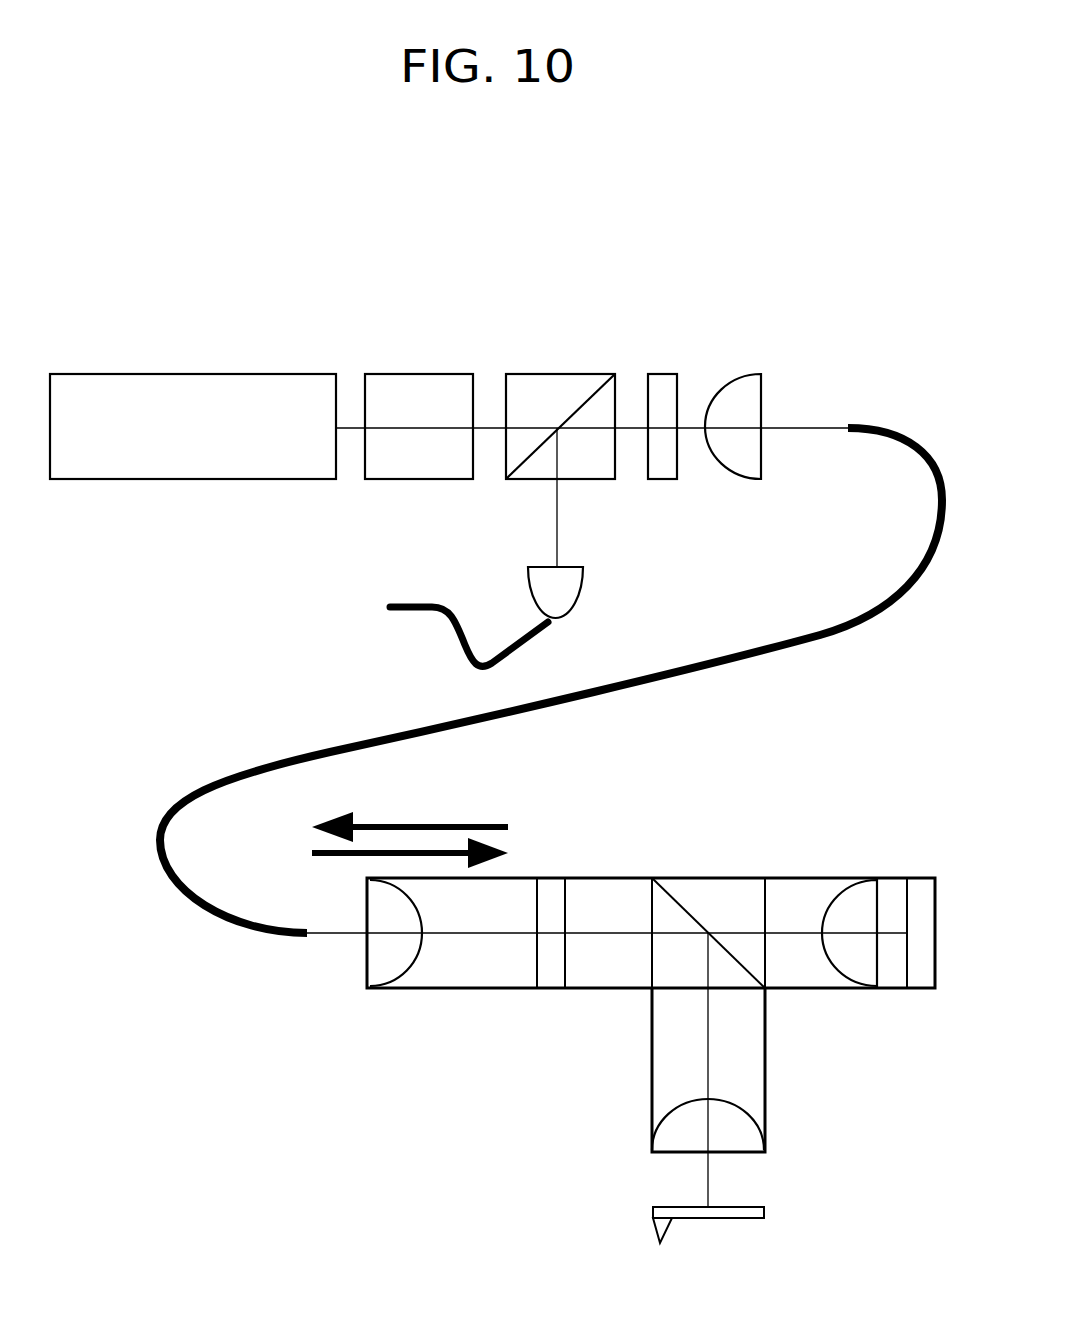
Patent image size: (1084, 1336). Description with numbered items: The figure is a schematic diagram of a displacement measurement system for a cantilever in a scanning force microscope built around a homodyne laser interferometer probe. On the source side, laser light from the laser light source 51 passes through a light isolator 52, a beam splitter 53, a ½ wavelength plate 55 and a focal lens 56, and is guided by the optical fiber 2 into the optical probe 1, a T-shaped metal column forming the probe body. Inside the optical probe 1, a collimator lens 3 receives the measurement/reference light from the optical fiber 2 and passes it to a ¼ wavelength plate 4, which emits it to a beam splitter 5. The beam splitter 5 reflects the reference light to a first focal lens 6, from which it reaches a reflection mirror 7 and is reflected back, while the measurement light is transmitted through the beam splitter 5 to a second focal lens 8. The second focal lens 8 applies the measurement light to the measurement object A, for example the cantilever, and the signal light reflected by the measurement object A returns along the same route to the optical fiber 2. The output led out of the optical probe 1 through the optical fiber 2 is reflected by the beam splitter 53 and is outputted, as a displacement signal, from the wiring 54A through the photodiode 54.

The laser light source 51 is at (293, 372).
The light isolator 52 is at (440, 372).
The beam splitter 53 is at (570, 372).
The photodiode 54 is at (584, 580).
The wiring 54A is at (432, 605).
The ½ wavelength plate 55 is at (665, 372).
The focal lens 56 is at (750, 372).
The optical fiber 2 is at (795, 648).
The optical probe 1 is at (617, 876).
The collimator lens 3 is at (378, 975).
The ¼ wavelength plate 4 is at (553, 975).
The beam splitter 5 is at (728, 876).
The first focal lens 6 is at (863, 890).
The reflection mirror 7 is at (918, 888).
The second focal lens 8 is at (745, 1138).
The measurement object A is at (764, 1212).